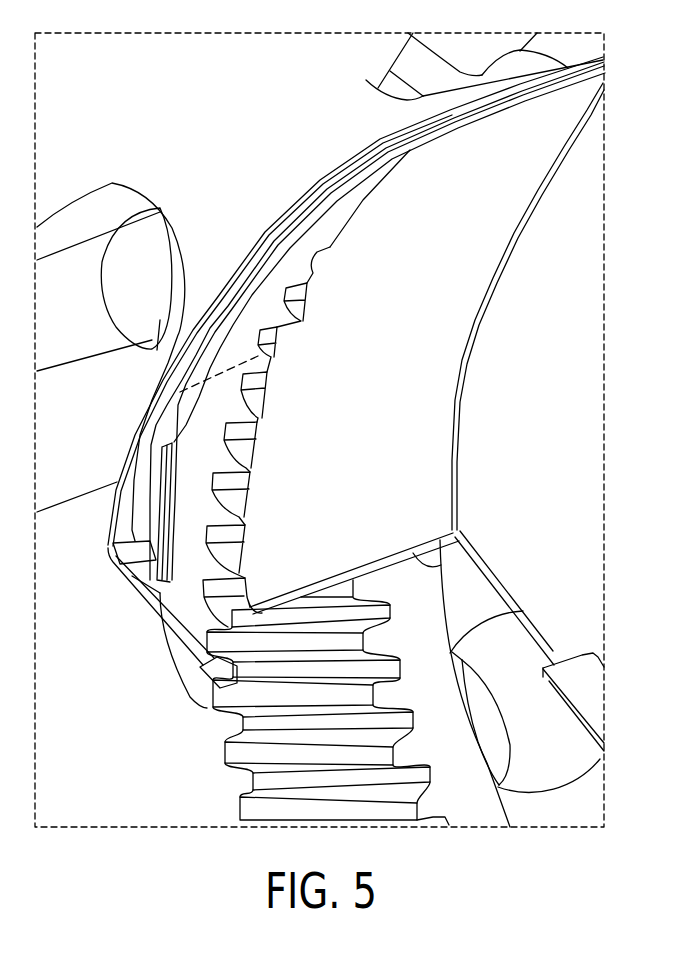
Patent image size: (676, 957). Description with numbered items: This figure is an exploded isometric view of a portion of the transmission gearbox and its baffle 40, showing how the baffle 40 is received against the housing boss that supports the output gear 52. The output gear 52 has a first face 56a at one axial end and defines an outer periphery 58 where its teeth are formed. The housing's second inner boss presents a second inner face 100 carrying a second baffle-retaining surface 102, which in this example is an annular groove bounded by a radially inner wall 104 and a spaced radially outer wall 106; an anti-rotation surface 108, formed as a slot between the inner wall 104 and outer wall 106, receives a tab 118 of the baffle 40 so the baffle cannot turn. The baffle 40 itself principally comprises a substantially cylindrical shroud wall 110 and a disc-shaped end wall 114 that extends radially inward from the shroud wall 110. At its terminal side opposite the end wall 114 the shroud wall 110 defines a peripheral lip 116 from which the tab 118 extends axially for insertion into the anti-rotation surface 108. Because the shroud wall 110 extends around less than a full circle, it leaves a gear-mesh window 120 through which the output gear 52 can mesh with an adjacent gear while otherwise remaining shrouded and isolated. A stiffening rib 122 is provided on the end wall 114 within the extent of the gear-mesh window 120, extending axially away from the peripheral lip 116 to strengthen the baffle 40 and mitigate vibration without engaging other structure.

The baffle 40 is at (500, 280).
The output gear 52 is at (518, 823).
The first face 56a is at (470, 813).
The outer periphery 58 is at (327, 812).
The second inner face 100 is at (189, 598).
The second baffle-retaining surface 102 is at (150, 585).
The radially inner wall 104 is at (163, 601).
The radially outer wall 106 is at (148, 566).
The anti-rotation surface 108 is at (147, 380).
The shroud wall 110 is at (371, 395).
The end wall 114 is at (557, 395).
The peripheral lip 116 is at (360, 200).
The tab 118 is at (280, 320).
The gear-mesh window 120 is at (456, 535).
The stiffening rib 122 is at (567, 655).